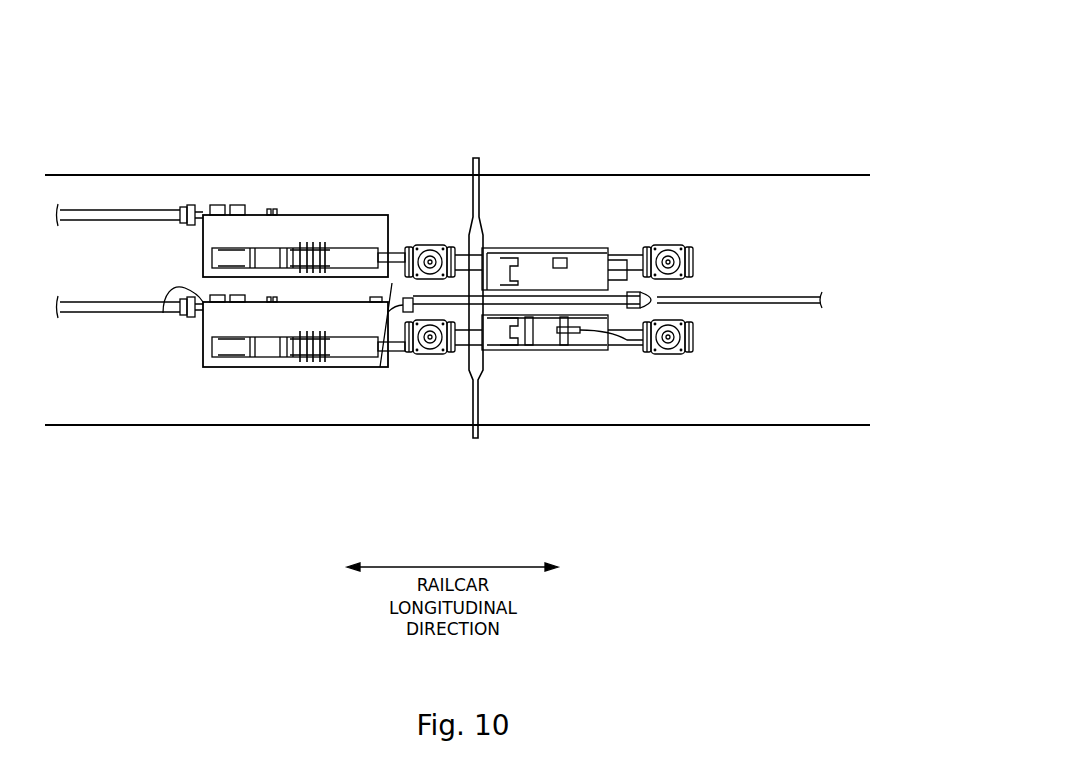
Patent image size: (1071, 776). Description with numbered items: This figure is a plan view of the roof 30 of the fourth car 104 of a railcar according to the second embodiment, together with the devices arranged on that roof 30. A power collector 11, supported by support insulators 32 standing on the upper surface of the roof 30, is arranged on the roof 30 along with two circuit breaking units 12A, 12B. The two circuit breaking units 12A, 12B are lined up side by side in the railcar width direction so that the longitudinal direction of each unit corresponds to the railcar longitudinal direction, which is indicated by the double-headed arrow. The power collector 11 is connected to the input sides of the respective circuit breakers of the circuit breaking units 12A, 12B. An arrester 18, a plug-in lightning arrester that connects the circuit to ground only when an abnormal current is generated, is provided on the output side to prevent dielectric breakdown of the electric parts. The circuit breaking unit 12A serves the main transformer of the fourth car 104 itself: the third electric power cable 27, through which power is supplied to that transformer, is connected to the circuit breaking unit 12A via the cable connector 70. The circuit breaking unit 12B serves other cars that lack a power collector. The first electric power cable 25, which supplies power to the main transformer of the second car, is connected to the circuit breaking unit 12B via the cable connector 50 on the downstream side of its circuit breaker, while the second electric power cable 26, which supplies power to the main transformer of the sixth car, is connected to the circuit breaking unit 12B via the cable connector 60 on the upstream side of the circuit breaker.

The fourth car 104 is at (168, 126).
The third electric power cable 27 is at (120, 210).
The first electric power cable 25 is at (108, 313).
The second electric power cable 26 is at (727, 294).
The cable connector 70 is at (222, 204).
The arrester 18 is at (295, 214).
The circuit breaking unit 12A is at (311, 165).
The circuit breaking unit 12B is at (304, 408).
The cable connector 60 is at (380, 367).
The cable connector 50 is at (163, 313).
The support insulator 32 is at (436, 245).
The power collector 11 is at (578, 382).
The roof 30 is at (727, 408).